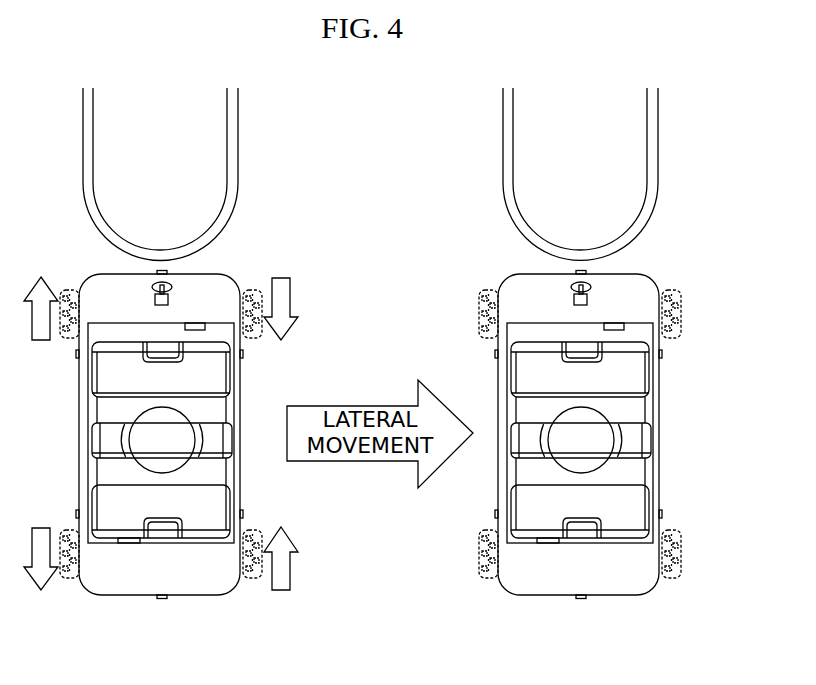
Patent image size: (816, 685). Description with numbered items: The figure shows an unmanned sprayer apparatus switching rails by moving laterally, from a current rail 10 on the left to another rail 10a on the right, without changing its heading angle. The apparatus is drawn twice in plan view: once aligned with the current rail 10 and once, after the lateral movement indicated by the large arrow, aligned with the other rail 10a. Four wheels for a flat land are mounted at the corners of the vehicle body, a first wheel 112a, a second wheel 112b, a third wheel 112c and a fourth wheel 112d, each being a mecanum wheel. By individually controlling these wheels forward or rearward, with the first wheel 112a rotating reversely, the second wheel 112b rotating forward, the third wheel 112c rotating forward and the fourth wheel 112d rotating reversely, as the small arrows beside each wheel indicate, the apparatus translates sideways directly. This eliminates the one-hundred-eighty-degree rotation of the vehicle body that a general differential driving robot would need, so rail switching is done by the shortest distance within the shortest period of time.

The current rail 10 is at (232, 150).
The another rail 10a is at (653, 150).
The first wheel 112a is at (252, 290).
The second wheel 112b is at (66, 290).
The third wheel 112c is at (252, 578).
The fourth wheel 112d is at (64, 578).